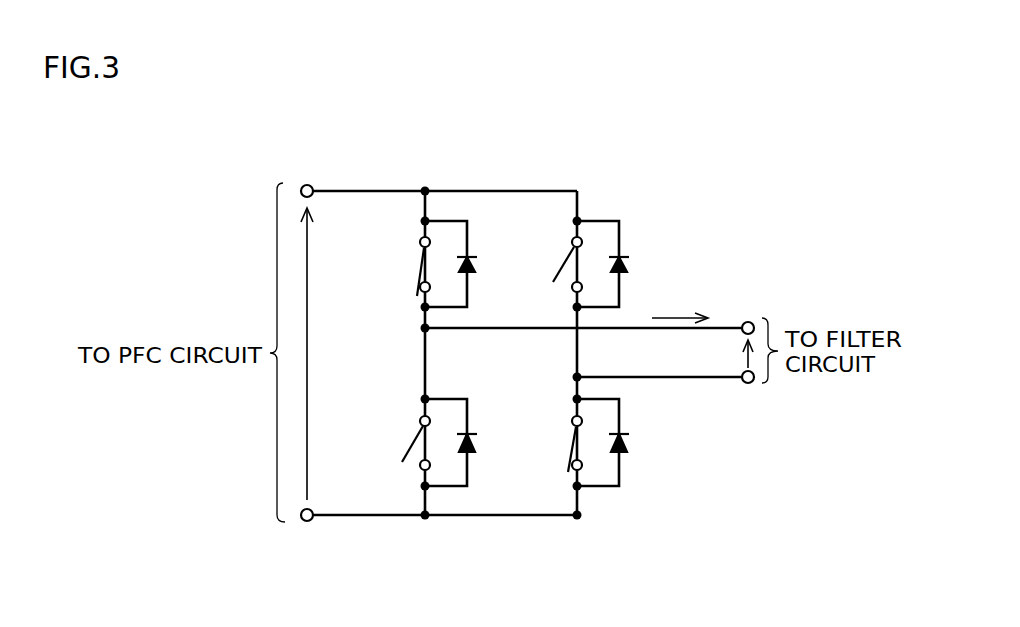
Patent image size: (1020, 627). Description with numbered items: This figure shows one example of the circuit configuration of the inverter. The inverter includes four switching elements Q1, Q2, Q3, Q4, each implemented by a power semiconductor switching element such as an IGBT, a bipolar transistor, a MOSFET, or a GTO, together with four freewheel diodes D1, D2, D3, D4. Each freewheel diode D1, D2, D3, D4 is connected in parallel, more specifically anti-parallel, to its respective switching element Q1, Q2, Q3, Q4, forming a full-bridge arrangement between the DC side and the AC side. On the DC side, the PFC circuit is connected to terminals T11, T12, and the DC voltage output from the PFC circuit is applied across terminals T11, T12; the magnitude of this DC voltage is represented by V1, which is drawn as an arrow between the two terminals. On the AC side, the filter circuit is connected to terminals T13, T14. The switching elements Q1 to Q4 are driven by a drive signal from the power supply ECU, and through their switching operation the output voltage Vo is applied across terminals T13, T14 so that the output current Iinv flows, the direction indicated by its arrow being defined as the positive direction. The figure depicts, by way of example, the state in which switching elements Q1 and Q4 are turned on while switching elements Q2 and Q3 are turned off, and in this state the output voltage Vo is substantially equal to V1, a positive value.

The terminal T11 is at (307, 177).
The terminal T12 is at (307, 522).
The terminal T13 is at (746, 314).
The terminal T14 is at (749, 390).
The switching element Q1 is at (420, 265).
The switching element Q2 is at (565, 257).
The switching element Q3 is at (412, 440).
The switching element Q4 is at (572, 440).
The freewheel diode D1 is at (475, 268).
The freewheel diode D2 is at (628, 268).
The freewheel diode D3 is at (477, 443).
The freewheel diode D4 is at (628, 443).
The DC voltage V1 is at (322, 354).
The output voltage Vo is at (730, 354).
The output current Iinv is at (680, 307).